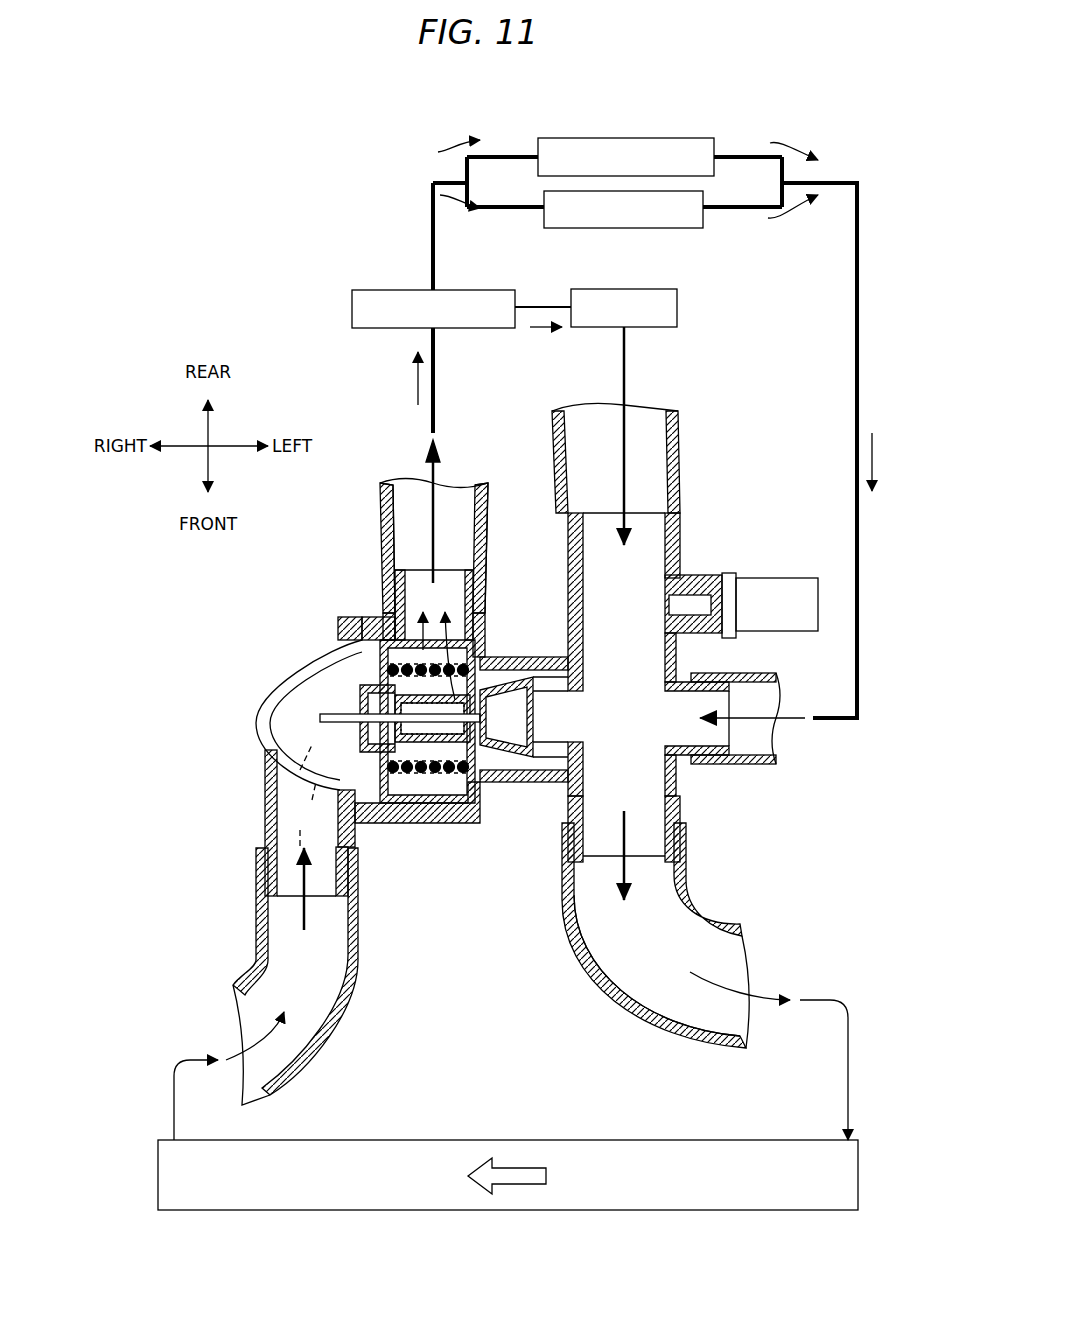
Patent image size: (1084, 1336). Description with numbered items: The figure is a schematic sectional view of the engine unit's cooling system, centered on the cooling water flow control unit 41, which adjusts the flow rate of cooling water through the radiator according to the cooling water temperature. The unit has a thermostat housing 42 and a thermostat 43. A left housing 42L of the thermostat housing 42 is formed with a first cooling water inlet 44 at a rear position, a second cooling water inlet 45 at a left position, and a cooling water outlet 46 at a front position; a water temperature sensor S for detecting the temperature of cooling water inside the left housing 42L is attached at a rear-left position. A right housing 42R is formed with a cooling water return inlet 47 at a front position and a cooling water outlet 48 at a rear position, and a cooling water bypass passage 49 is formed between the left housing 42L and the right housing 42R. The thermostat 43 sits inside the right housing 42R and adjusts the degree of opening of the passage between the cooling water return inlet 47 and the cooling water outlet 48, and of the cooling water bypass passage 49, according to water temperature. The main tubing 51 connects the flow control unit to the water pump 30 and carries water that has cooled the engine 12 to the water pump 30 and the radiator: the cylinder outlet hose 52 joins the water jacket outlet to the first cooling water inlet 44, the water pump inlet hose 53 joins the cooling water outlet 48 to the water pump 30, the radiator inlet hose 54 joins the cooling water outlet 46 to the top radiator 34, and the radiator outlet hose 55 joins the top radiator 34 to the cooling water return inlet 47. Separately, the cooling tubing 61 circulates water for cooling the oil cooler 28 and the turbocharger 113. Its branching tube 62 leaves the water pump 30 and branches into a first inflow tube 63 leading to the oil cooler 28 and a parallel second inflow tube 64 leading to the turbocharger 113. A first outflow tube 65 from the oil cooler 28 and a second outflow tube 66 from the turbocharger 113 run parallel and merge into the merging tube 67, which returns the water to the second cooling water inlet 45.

The turbocharger 113 is at (600, 138).
The oil cooler 28 is at (600, 230).
The water pump 30 is at (352, 307).
The engine 12 is at (677, 310).
The cooling tubing 61 is at (840, 145).
The branching tube 62 is at (433, 218).
The first inflow tube 63 is at (520, 210).
The second inflow tube 64 is at (520, 152).
The first outflow tube 65 is at (725, 210).
The second outflow tube 66 is at (725, 148).
The merging tube 67 is at (857, 365).
The top radiator 34 is at (418, 1140).
The cooling water flow control unit 41 is at (400, 666).
The thermostat housing 42 is at (510, 560).
The left housing 42L is at (570, 600).
The right housing 42R is at (513, 657).
The thermostat 43 is at (322, 700).
The first cooling water inlet 44 is at (668, 637).
The second cooling water inlet 45 is at (735, 756).
The cooling water outlet 46 is at (680, 856).
The cooling water return inlet 47 is at (272, 896).
The cooling water outlet 48 is at (405, 572).
The cooling water bypass passage 49 is at (545, 680).
The main tubing 51 is at (582, 1008).
The cylinder outlet hose 52 is at (668, 436).
The water pump inlet hose 53 is at (383, 490).
The radiator inlet hose 54 is at (575, 958).
The radiator outlet hose 55 is at (358, 948).
The water temperature sensor S is at (812, 578).